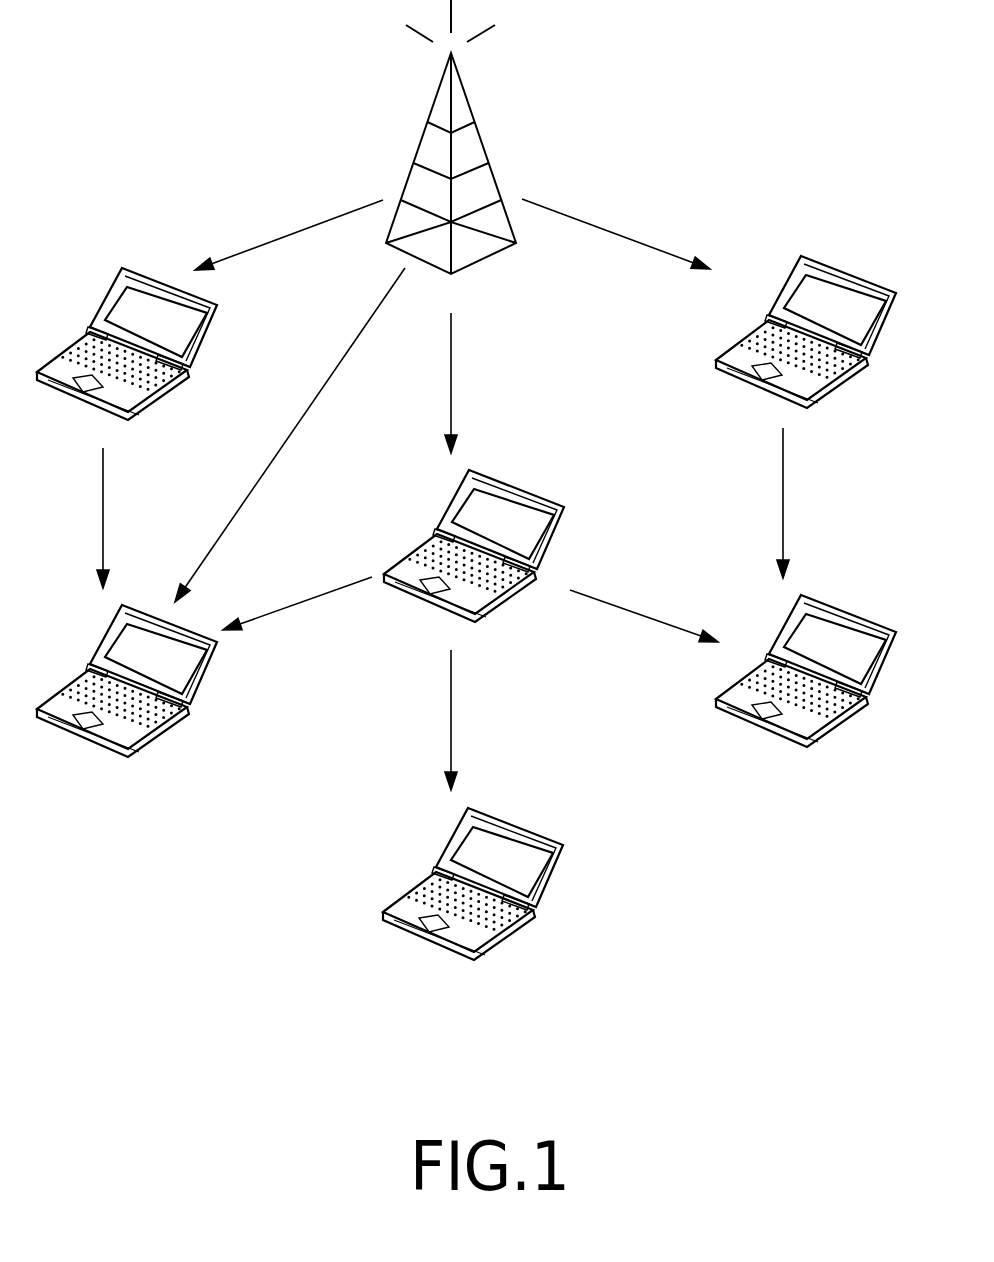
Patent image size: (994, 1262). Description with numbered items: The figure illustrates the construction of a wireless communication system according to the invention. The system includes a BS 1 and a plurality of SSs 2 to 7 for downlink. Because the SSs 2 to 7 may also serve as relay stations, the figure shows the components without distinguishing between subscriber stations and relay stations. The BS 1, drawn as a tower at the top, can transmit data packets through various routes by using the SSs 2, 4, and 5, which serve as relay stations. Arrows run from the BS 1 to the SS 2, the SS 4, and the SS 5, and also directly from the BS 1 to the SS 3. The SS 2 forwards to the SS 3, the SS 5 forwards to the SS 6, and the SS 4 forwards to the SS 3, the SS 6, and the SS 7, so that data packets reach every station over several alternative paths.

The BS 1 is at (487, 144).
The SS 2 is at (207, 335).
The SS 3 is at (145, 681).
The SS 4 is at (492, 546).
The SS 5 is at (824, 332).
The SS 6 is at (824, 671).
The SS 7 is at (491, 884).